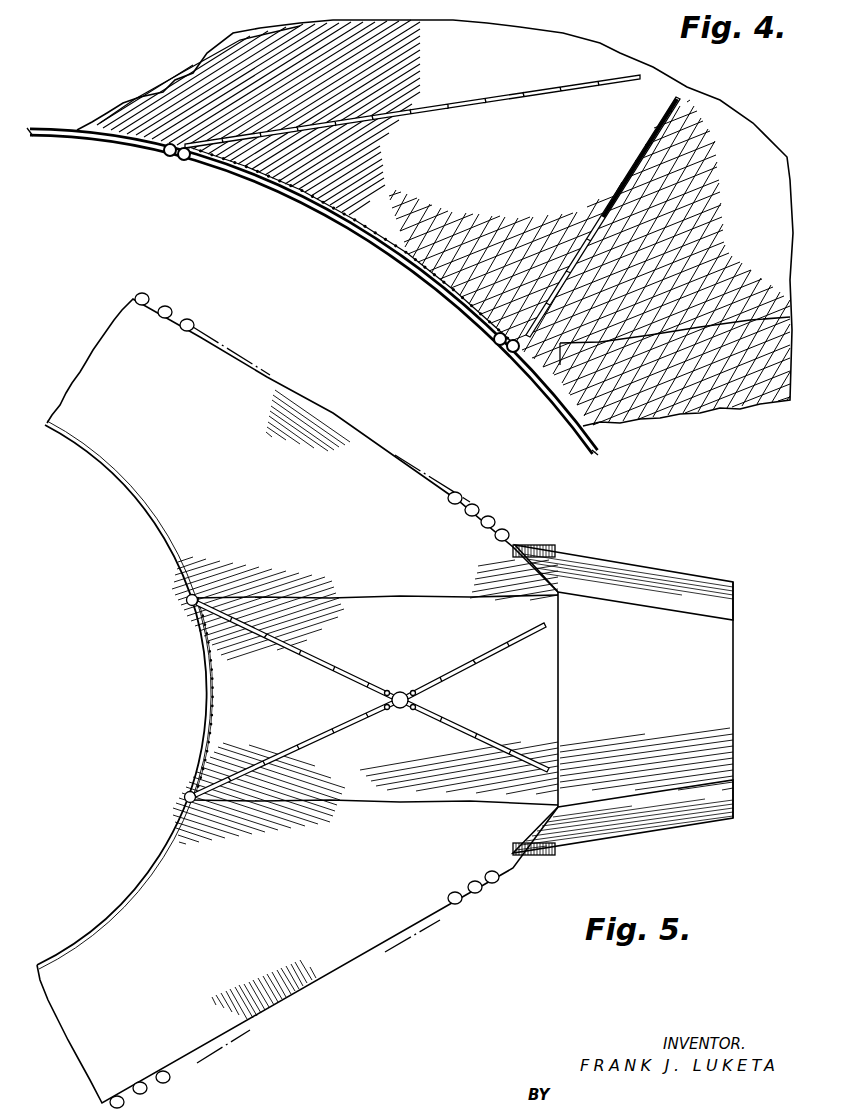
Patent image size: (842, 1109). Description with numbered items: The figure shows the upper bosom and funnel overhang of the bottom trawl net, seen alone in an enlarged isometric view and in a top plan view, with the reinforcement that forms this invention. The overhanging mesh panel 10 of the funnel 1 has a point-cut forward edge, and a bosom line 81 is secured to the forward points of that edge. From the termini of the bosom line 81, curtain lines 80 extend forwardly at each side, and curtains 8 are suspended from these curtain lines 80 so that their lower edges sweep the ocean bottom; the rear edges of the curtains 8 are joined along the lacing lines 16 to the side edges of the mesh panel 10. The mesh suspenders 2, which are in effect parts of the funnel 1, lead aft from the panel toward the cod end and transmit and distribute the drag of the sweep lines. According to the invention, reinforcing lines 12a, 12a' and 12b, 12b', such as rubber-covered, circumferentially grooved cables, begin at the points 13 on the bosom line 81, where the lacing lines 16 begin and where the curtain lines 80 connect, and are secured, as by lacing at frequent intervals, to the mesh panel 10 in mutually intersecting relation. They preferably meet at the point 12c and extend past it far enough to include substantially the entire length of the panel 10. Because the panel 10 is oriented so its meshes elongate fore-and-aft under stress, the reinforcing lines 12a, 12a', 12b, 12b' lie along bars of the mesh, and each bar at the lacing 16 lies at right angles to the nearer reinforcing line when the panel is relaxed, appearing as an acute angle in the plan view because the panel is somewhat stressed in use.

In FIG. 5, the funnel 1 is at (635, 694).
In FIG. 5, the mesh suspenders 2 is at (718, 608).
In FIG. 4, the curtains 8 is at (160, 98).
In FIG. 5, the curtains 8 is at (156, 393).
In FIG. 4, the mesh panel 10 is at (516, 171).
In FIG. 5, the mesh panel 10 is at (293, 706).
In FIG. 4, the reinforcing line 12a is at (603, 217).
In FIG. 5, the reinforcing line 12a is at (294, 749).
In FIG. 4, the reinforcing line 12b is at (412, 107).
In FIG. 5, the reinforcing line 12b is at (295, 650).
In FIG. 5, the reinforcing line 12a' is at (476, 661).
In FIG. 5, the reinforcing line 12b' is at (477, 736).
In FIG. 5, the intersection point 12c is at (398, 690).
In FIG. 4, the beginning point of reinforcing lines 13 is at (167, 160).
In FIG. 5, the beginning point of reinforcing lines 13 is at (186, 601).
In FIG. 4, the lacing lines 16 is at (282, 90).
In FIG. 5, the lacing lines 16 is at (382, 596).
In FIG. 4, the curtain lines 80 is at (103, 145).
In FIG. 5, the curtain lines 80 is at (90, 456).
In FIG. 4, the bosom line 81 is at (340, 222).
In FIG. 5, the bosom line 81 is at (206, 690).